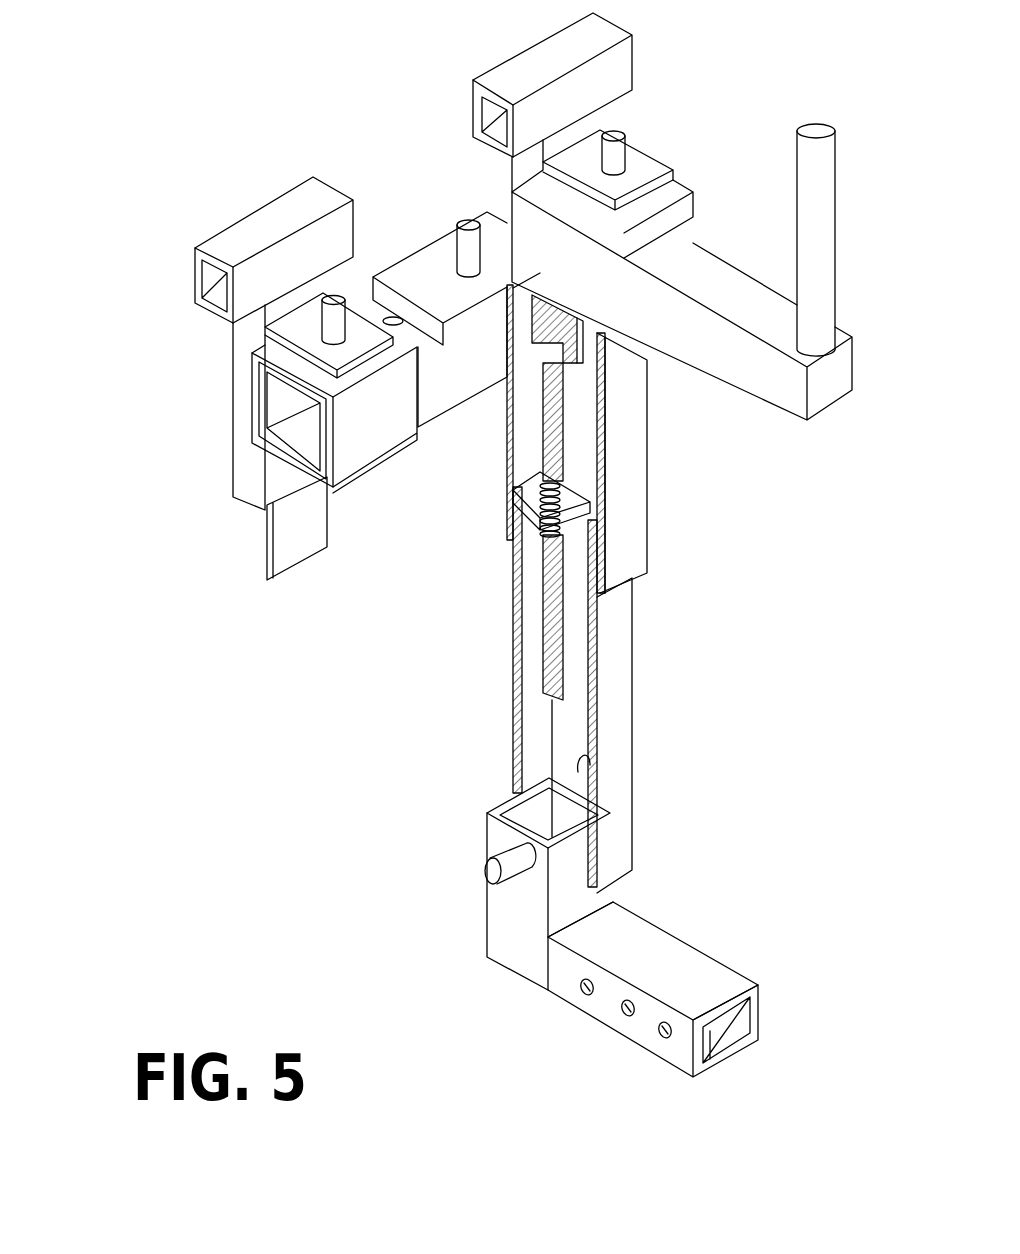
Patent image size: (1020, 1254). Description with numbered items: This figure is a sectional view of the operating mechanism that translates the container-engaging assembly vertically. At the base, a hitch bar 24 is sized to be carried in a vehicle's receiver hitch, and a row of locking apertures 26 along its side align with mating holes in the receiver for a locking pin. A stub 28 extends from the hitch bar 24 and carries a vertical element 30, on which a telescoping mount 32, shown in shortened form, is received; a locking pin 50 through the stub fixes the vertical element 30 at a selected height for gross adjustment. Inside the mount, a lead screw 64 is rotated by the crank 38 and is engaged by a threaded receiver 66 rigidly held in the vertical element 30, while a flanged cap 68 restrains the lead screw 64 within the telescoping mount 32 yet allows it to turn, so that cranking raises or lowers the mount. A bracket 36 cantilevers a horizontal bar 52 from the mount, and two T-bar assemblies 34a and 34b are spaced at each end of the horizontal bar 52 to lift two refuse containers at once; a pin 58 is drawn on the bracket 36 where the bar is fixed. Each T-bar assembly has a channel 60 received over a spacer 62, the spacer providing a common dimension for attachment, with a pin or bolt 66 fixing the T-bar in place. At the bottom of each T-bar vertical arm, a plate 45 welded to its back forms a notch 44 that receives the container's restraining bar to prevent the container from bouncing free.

The hitch bar 24 is at (660, 965).
The locking apertures 26 is at (627, 1013).
The stub 28 is at (517, 938).
The vertical element 30 is at (617, 707).
The telescoping mount 32 is at (632, 483).
The T-bar assembly 34a is at (563, 52).
The T-bar assembly 34b is at (263, 227).
The bracket 36 is at (427, 260).
The crank 38 is at (682, 260).
The notch 44 is at (247, 505).
The plate 45 is at (303, 528).
The locking pin 50 is at (493, 882).
The horizontal bar 52 is at (453, 367).
The cylinder pin 58 is at (467, 217).
The channel 60 is at (305, 327).
The spacer 62 is at (371, 421).
The lead screw 64 is at (560, 517).
The threaded receiver 66 is at (622, 133).
The flanged cap 68 is at (588, 352).